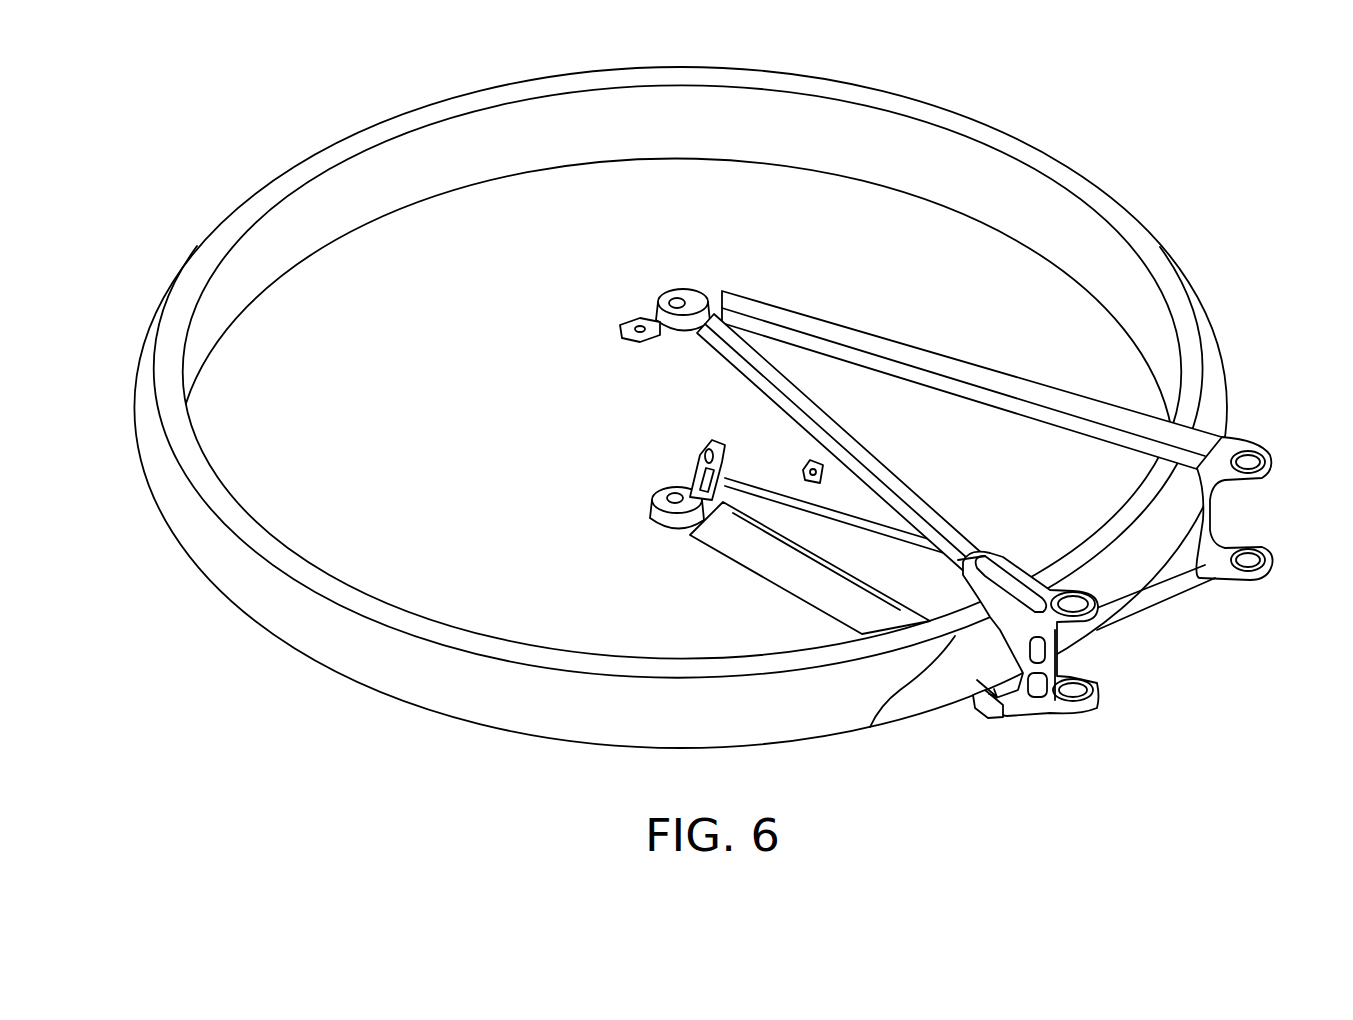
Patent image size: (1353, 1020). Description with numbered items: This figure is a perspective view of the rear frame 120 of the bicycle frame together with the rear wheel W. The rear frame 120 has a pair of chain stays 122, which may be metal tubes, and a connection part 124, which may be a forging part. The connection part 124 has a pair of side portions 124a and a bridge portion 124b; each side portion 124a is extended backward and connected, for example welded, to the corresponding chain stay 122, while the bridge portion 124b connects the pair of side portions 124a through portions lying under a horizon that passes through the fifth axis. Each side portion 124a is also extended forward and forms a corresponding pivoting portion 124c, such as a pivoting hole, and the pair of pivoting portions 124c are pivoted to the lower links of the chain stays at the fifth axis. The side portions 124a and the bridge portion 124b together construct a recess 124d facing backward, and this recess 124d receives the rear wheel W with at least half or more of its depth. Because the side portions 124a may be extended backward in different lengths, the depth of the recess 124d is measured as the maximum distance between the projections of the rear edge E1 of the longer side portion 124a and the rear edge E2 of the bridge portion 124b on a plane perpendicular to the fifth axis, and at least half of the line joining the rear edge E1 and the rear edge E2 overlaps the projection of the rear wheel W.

The rear wheel W is at (1160, 280).
The rear frame 120 is at (946, 542).
The chain stay 122 is at (857, 457).
The connection part 124 is at (1042, 639).
The side portion 124a is at (1015, 598).
The bridge portion 124b is at (993, 717).
The pivoting portion 124c is at (1122, 608).
The recess 124d is at (960, 697).
The rear edge of the side portion E1 is at (955, 565).
The rear edge of the bridge portion E2 is at (907, 663).